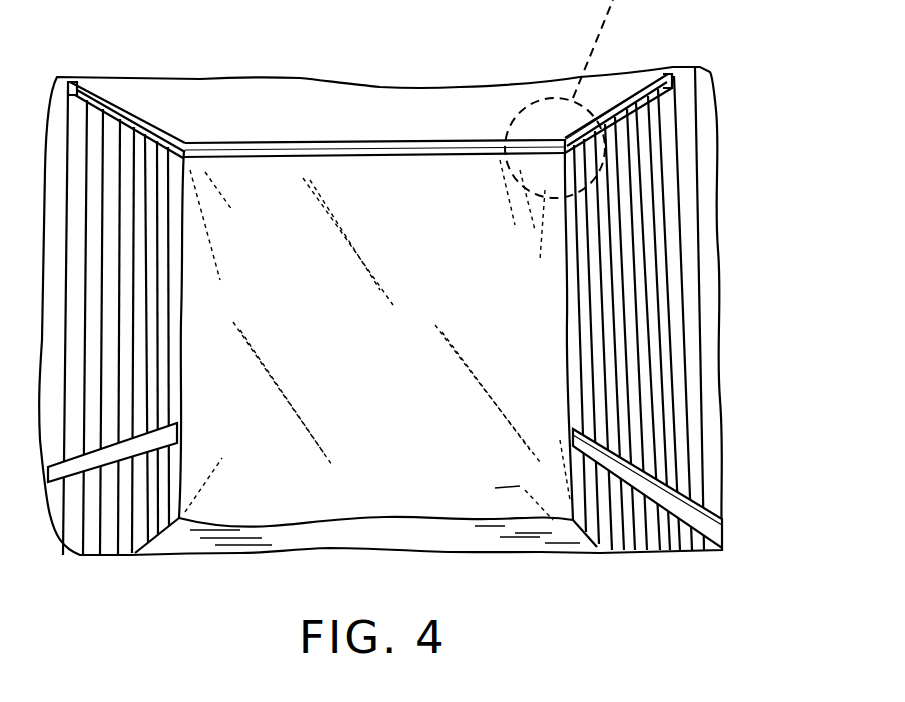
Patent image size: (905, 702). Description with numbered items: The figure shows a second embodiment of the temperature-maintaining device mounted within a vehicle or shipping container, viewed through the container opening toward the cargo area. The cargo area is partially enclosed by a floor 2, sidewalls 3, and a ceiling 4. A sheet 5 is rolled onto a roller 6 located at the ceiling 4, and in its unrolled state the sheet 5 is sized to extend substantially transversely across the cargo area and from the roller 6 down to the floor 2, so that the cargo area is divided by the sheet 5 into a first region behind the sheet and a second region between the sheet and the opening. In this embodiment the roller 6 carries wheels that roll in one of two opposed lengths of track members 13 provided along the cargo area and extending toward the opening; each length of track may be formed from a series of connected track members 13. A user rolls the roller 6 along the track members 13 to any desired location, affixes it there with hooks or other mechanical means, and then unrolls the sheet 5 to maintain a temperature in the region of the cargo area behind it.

The floor 2 is at (572, 528).
The sidewall 3 is at (673, 327).
The ceiling 4 is at (303, 111).
The sheet 5 is at (500, 490).
The roller 6 is at (248, 153).
The track members 13 is at (643, 90).